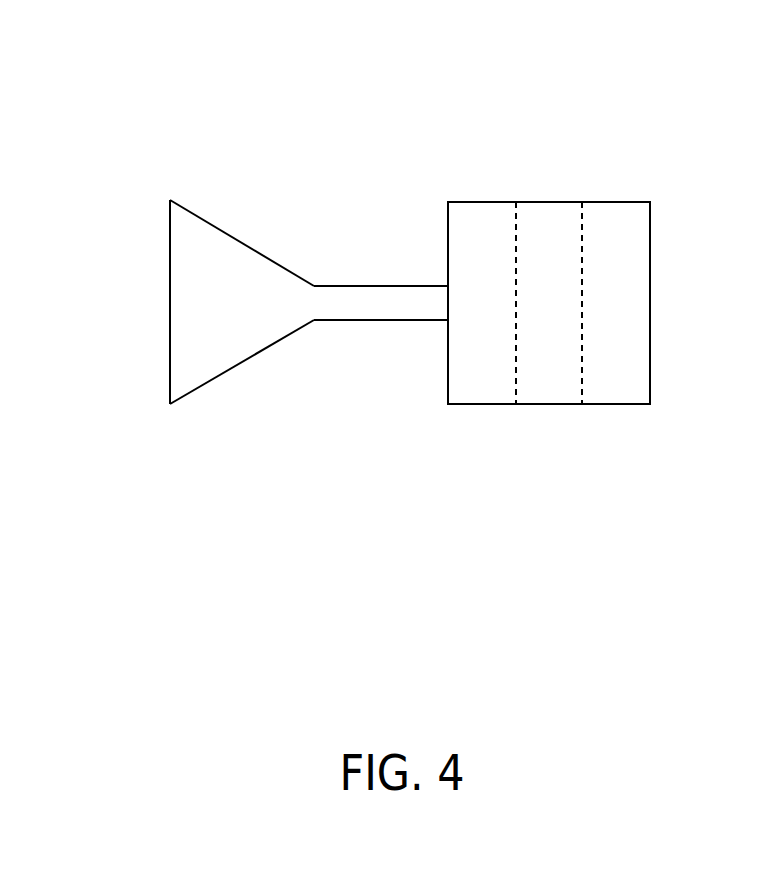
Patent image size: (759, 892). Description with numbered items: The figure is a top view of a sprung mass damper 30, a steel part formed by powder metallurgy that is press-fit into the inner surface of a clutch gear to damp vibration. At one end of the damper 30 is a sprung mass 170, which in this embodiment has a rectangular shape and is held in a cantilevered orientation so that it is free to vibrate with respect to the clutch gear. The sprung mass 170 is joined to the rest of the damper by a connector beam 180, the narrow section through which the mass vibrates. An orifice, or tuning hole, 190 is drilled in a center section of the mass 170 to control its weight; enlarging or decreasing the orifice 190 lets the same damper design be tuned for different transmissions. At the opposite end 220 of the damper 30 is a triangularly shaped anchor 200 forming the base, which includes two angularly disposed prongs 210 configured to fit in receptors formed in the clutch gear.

The sprung mass damper 30 is at (432, 116).
The sprung mass 170 is at (630, 272).
The connector beam 180 is at (370, 286).
The orifice 190 is at (512, 243).
The anchor 200 is at (185, 248).
The prongs 210 is at (233, 234).
The end 220 is at (325, 470).